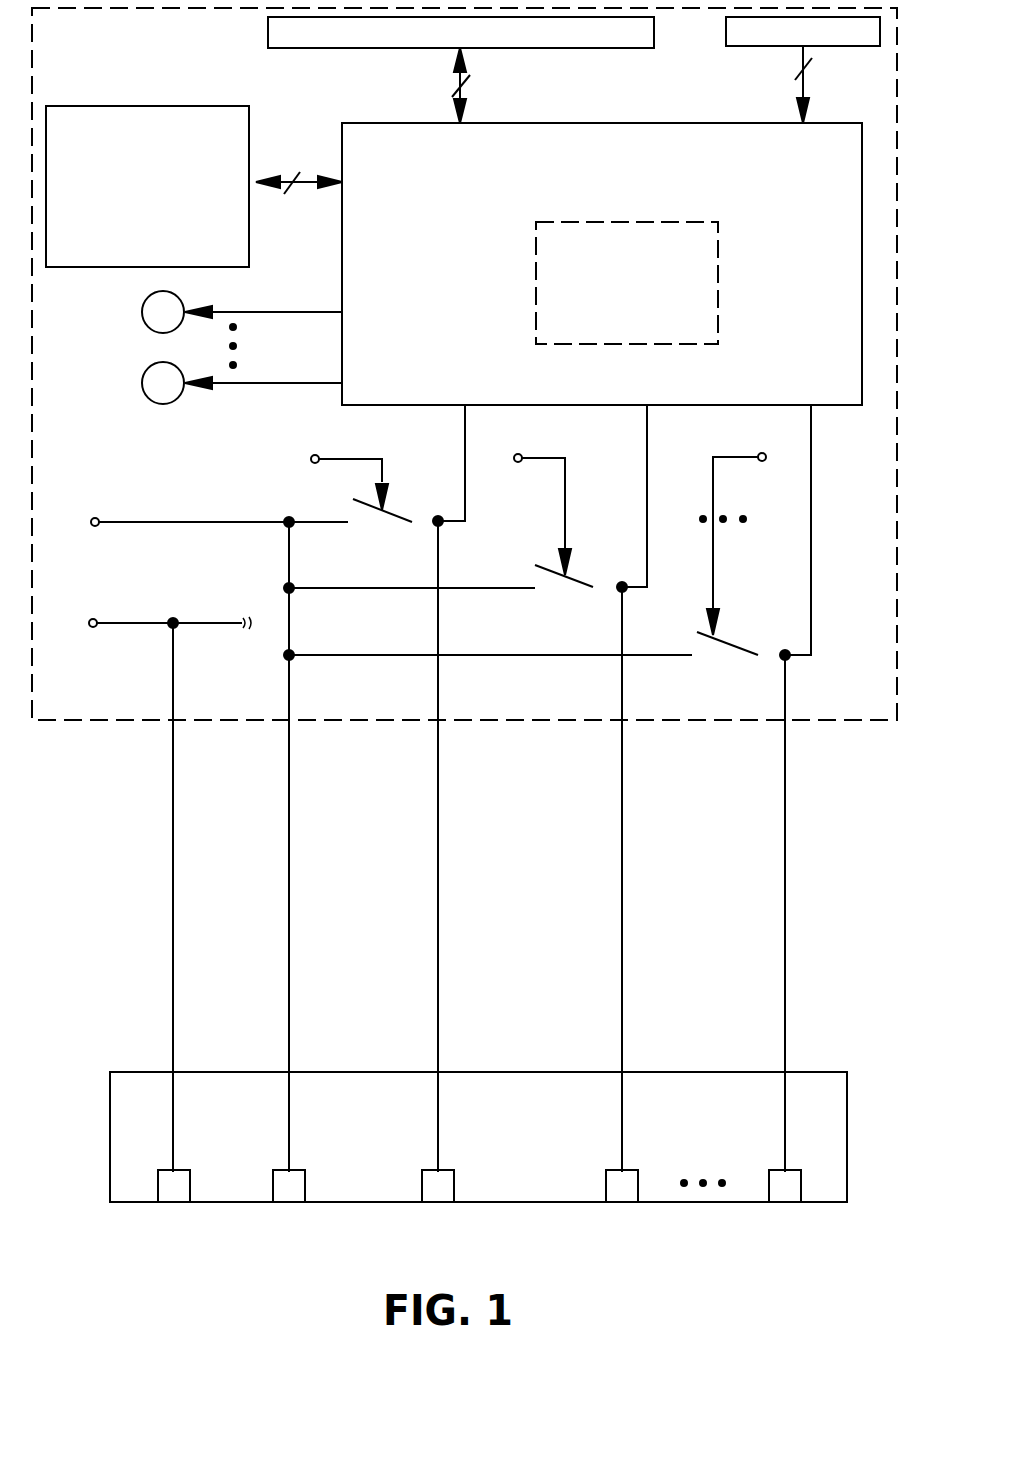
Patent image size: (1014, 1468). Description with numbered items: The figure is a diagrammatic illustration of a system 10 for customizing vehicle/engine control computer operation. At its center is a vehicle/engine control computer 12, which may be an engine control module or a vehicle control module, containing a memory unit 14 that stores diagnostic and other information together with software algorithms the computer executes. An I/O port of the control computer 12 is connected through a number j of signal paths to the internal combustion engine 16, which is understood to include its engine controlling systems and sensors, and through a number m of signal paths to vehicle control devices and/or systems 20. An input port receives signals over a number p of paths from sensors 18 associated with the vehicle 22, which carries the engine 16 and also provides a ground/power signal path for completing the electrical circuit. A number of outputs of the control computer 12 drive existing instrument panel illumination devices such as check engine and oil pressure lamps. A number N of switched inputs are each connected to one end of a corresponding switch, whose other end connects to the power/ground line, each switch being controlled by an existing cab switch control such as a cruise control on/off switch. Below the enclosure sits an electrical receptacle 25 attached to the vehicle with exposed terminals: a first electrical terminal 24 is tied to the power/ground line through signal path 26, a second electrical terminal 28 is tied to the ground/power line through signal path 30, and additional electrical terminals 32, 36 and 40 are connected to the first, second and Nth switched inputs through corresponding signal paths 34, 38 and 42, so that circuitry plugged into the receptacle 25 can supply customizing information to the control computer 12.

The system 10 is at (464, 645).
The vehicle/engine control computer 12 is at (606, 297).
The memory unit 14 is at (718, 292).
The internal combustion engine 16 is at (250, 134).
The sensors 18 is at (726, 36).
The vehicle control devices and/or systems 20 is at (268, 26).
The vehicle 22 is at (716, 720).
The first electrical terminal 24 is at (288, 1203).
The electrical receptacle 25 is at (700, 1072).
The signal path 26 is at (289, 925).
The second electrical terminal 28 is at (174, 1203).
The signal path 30 is at (173, 930).
The electrical terminal 32 is at (438, 1203).
The signal path 34 is at (438, 925).
The electrical terminal 36 is at (622, 1203).
The signal path 38 is at (622, 925).
The electrical terminal 40 is at (785, 1203).
The signal path 42 is at (785, 925).